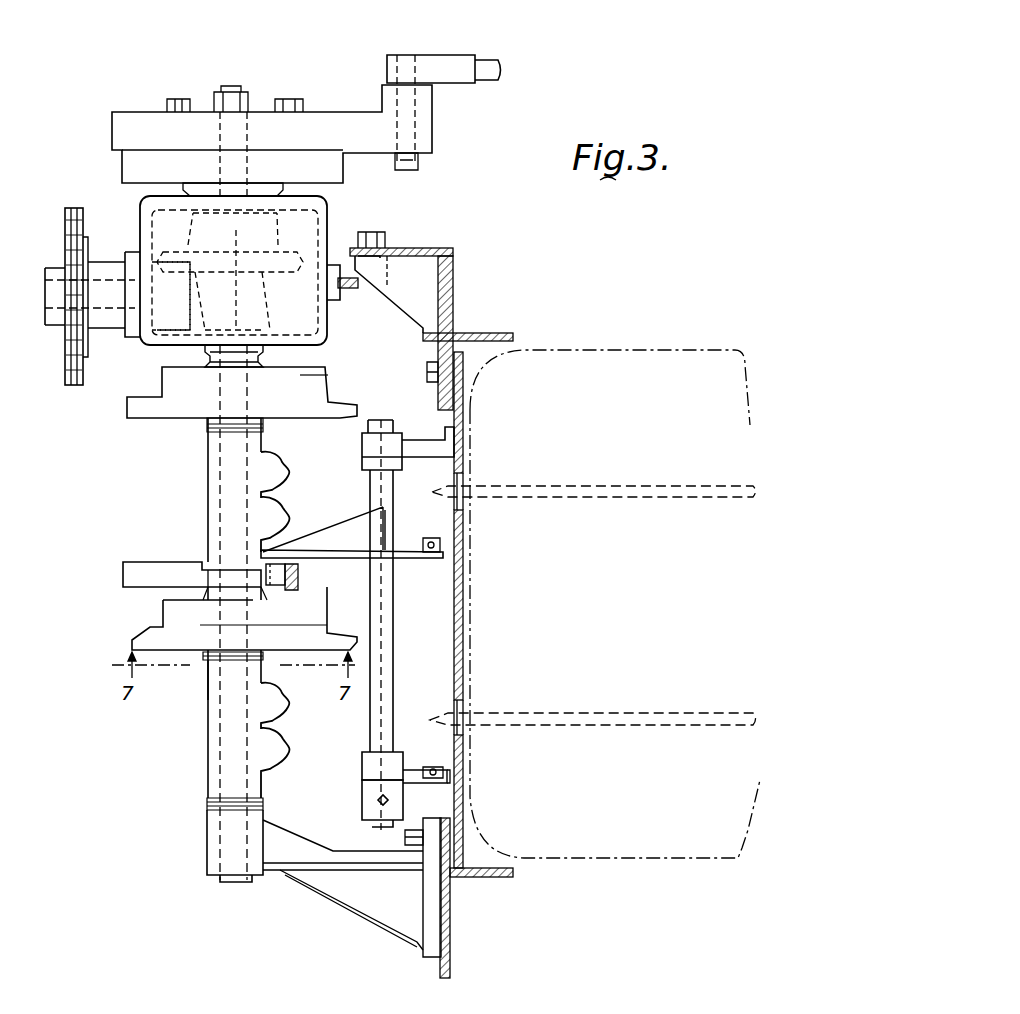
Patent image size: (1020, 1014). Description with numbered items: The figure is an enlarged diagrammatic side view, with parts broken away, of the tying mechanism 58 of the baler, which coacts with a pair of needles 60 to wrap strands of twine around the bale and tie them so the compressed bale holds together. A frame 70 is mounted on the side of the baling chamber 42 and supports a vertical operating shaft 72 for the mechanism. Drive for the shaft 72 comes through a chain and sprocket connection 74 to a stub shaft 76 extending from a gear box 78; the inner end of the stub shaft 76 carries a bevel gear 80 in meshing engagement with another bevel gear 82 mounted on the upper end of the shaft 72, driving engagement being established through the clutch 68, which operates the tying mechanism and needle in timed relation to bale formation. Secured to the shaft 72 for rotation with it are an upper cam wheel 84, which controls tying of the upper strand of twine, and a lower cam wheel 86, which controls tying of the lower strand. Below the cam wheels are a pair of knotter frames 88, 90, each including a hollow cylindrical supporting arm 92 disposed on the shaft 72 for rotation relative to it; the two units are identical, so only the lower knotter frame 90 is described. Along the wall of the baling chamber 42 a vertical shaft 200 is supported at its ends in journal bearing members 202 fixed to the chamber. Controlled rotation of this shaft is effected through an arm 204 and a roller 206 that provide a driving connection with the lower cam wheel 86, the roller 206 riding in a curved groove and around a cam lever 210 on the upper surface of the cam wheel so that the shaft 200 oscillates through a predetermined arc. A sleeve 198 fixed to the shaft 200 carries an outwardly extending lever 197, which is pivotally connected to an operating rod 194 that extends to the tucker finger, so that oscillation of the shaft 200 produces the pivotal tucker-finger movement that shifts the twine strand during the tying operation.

The clutch 68 is at (132, 132).
The gear box 78 is at (333, 206).
The bevel gear 82 is at (227, 271).
The stub shaft 76 is at (118, 315).
The chain and sprocket connection 74 is at (58, 224).
The bevel gear 80 is at (170, 338).
The upper cam wheel 84 is at (138, 408).
The tying mechanism 58 is at (204, 484).
The knotter frame 88 is at (282, 498).
The knotter frame 90 is at (283, 730).
The cam lever 210 is at (150, 562).
The roller 206 is at (278, 590).
The lower cam wheel 86 is at (140, 628).
The hollow cylindrical supporting arm 92 is at (212, 682).
The vertical operating shaft 72 is at (235, 768).
The frame 70 is at (448, 290).
The journal bearing members 202 is at (428, 440).
The vertical shaft 200 is at (393, 678).
The arm 204 is at (345, 555).
The sleeve 198 is at (362, 768).
The lever 197 is at (408, 778).
The operating rod 194 is at (433, 778).
The baling chamber 42 is at (528, 624).
The needle 60 is at (496, 487).